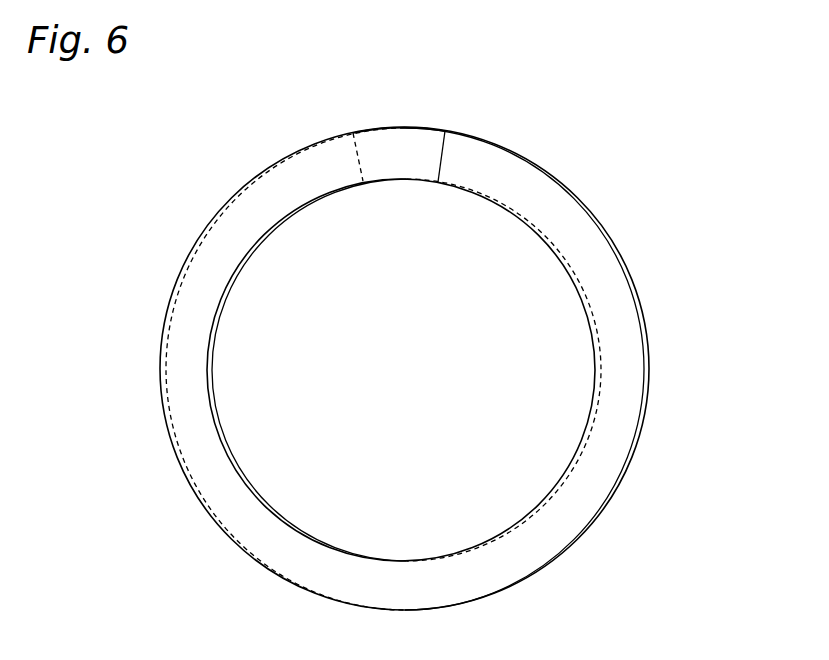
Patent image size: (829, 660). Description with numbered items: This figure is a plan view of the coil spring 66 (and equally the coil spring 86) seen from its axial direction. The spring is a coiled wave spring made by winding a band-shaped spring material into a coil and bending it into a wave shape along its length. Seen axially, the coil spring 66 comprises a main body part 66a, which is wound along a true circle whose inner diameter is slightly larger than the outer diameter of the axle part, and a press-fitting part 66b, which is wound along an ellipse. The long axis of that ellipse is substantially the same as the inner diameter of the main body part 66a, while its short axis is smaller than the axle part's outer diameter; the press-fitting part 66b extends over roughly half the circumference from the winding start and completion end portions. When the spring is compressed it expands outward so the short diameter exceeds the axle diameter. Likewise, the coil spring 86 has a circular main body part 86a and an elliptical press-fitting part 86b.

The coil spring 66 is at (465, 368).
The coil spring 86 is at (648, 186).
The main body part 66a is at (416, 177).
The main body part 86a is at (386, 171).
The press-fitting part 66b is at (404, 370).
The press-fitting part 86b is at (215, 352).